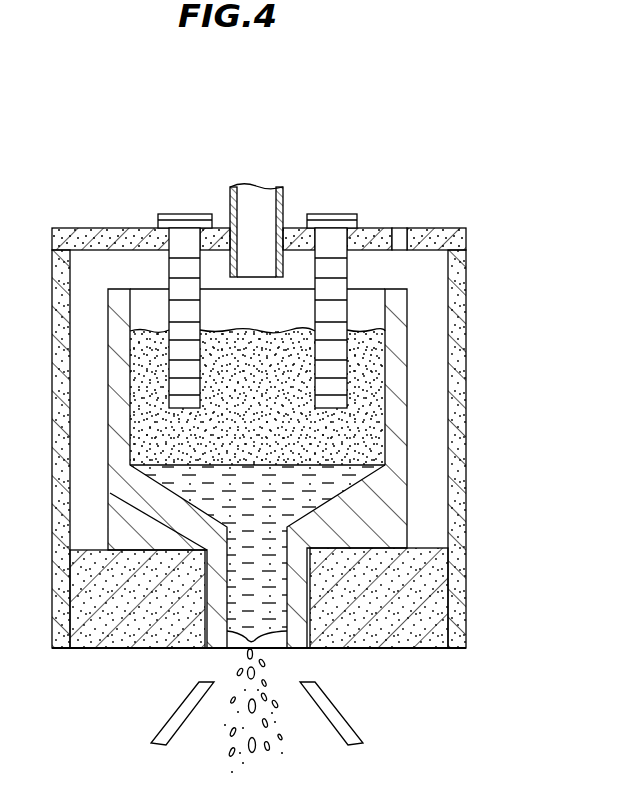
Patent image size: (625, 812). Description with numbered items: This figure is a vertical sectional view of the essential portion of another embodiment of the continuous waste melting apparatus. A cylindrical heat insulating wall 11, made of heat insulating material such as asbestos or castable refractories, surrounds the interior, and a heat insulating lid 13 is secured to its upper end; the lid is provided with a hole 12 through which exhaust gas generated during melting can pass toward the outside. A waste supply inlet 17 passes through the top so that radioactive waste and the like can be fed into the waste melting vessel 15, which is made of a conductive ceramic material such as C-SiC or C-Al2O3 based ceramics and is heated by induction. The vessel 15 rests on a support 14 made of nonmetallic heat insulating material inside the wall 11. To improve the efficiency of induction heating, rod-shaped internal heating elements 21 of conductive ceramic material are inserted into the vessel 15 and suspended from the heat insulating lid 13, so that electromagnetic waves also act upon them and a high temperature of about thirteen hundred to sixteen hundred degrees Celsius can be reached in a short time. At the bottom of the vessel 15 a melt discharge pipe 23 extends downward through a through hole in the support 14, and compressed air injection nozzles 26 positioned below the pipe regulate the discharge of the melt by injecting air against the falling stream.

The heat insulating wall 11 is at (467, 333).
The hole 12 is at (398, 228).
The heat insulating lid 13 is at (451, 227).
The support 14 is at (437, 590).
The waste melting vessel 15 is at (393, 510).
The waste supply inlet 17 is at (260, 200).
The internal heating elements 21 is at (330, 267).
The melt discharge pipe 23 is at (279, 632).
The compressed air injection nozzles 26 is at (343, 723).